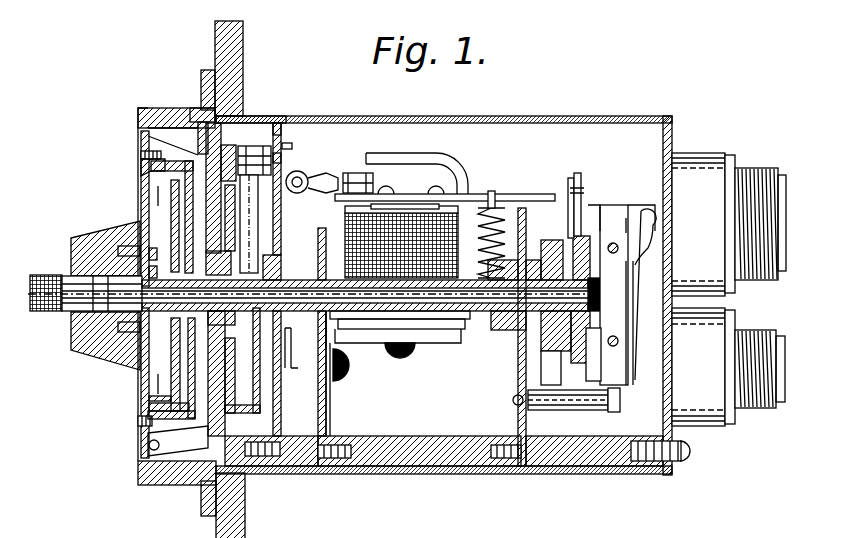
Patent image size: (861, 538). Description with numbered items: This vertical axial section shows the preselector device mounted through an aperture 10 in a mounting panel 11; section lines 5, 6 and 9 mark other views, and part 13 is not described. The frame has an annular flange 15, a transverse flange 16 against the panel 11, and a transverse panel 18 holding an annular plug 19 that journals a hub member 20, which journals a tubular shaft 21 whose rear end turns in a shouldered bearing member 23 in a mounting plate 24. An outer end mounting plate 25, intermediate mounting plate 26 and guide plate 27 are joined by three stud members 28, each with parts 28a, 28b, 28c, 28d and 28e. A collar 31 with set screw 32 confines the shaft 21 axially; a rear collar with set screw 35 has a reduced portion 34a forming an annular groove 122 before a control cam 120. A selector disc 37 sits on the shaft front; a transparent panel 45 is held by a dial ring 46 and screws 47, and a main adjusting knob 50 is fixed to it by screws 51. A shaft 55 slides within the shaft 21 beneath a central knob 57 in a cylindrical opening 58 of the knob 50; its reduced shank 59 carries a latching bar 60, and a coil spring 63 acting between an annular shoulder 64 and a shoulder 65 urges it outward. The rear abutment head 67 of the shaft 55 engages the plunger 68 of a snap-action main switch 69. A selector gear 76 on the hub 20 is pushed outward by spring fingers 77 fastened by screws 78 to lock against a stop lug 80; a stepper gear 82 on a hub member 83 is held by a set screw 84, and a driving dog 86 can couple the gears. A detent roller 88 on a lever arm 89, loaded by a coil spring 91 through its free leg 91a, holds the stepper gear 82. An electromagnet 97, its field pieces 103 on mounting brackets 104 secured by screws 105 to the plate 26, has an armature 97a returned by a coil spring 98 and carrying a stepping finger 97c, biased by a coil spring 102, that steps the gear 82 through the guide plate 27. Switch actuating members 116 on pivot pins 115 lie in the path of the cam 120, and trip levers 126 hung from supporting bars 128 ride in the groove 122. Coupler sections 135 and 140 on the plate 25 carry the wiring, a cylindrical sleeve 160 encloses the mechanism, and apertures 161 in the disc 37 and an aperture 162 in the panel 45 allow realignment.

The section line 5 is at (238, 100).
The section line 6 is at (104, 187).
The section line 9 is at (540, 85).
The aperture 10 is at (237, 83).
The mounting panel 11 is at (237, 25).
The inclined plate 13 is at (173, 146).
The annular flange 15 is at (132, 103).
The transverse flange 16 is at (196, 65).
The transverse panel 18 is at (200, 192).
The annular plug 19 is at (198, 253).
The hub member 20 is at (212, 373).
The tubular shaft 21 is at (273, 322).
The shouldered bearing member 23 is at (538, 240).
The mounting plate 24 is at (533, 350).
The outer end mounting plate 25 is at (655, 395).
The intermediate mounting plate 26 is at (322, 407).
The guide plate 27 is at (310, 396).
The stud members 28 is at (437, 458).
The stud part 28a is at (278, 466).
The stud part 28b is at (312, 466).
The stud part 28c is at (388, 466).
The stud part 28d is at (503, 462).
The stud part 28e is at (652, 466).
The collar 31 is at (510, 330).
The set screw 32 is at (480, 312).
The reduced diameter portion 34a is at (560, 360).
The set screw 35 is at (560, 220).
The selector disc 37 is at (165, 320).
The transparent panel 45 is at (135, 163).
The dial ring 46 is at (133, 125).
The screws 47 is at (133, 146).
The main adjusting knob 50 is at (80, 232).
The screws 51 is at (148, 222).
The shaft 55 is at (284, 286).
The central knob 57 is at (48, 303).
The cylindrical opening 58 is at (108, 318).
The reduced shank 59 is at (149, 246).
The latching bar 60 is at (164, 267).
The coil spring 63 is at (108, 242).
The annular shoulder 64 is at (90, 270).
The shoulder 65 is at (100, 330).
The abutment head 67 is at (595, 272).
The spring-pressed plunger 68 is at (630, 280).
The snap-action switch 69 is at (640, 263).
The selector gear 76 is at (198, 405).
The spring fingers 77 is at (157, 100).
The screws 78 is at (188, 100).
The stop lug 80 is at (278, 108).
The stepper gear 82 is at (290, 358).
The hub member 83 is at (280, 342).
The set screw 84 is at (273, 215).
The driving dog 86 is at (228, 405).
The roller 88 is at (274, 128).
The lever arm 89 is at (274, 150).
The coil spring 91 is at (262, 128).
The free leg 91a is at (285, 138).
The electromagnet 97 is at (350, 228).
The armature 97a is at (400, 186).
The stepping finger 97c is at (372, 148).
The coil springs 98 is at (480, 200).
The coil spring 102 is at (300, 168).
The field pieces 103 is at (393, 340).
The mounting brackets 104 is at (365, 330).
The screws 105 is at (340, 362).
The pivot pins 115 is at (590, 402).
The switch actuating members 116 is at (505, 392).
The control cam 120 is at (595, 205).
The annular groove 122 is at (570, 228).
The trip levers 126 is at (574, 205).
The supporting bars 128 is at (487, 190).
The coupler section 135 is at (700, 147).
The coupler section 140 is at (705, 420).
The cylindrical sleeve 160 is at (452, 108).
The apertures 161 is at (140, 402).
The aperture 162 is at (140, 391).